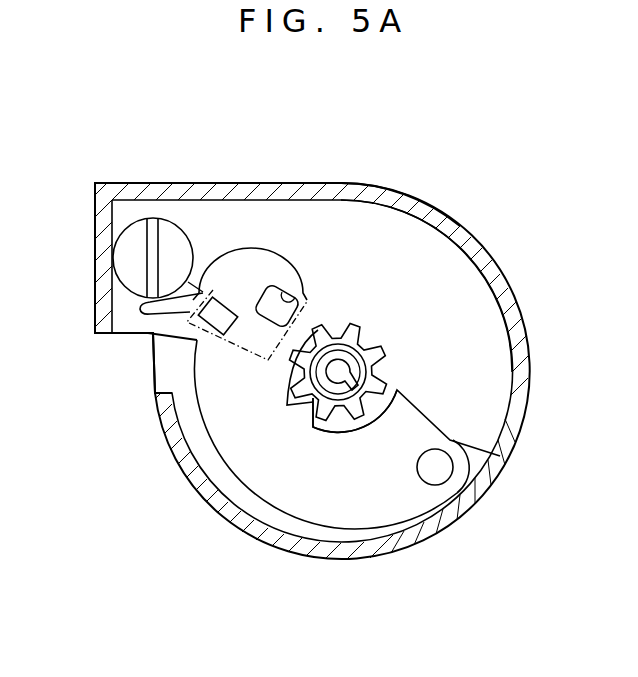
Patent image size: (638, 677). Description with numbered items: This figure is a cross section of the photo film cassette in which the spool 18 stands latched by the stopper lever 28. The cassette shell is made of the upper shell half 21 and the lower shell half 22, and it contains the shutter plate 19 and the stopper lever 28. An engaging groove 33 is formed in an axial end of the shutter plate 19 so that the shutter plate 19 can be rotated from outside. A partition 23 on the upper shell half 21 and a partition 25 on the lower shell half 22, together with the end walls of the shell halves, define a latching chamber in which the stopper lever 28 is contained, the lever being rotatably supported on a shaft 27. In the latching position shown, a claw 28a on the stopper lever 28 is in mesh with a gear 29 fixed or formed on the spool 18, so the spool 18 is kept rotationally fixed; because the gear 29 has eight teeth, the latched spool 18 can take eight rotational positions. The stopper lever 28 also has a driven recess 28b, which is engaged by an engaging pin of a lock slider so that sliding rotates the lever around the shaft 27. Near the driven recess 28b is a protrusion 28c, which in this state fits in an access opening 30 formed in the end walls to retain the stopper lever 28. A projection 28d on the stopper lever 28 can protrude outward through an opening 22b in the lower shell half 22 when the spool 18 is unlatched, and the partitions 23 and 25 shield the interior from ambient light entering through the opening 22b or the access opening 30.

The spool 18 is at (385, 372).
The shutter plate 19 is at (130, 250).
The upper shell half 21 is at (327, 190).
The lower shell half 22 is at (237, 525).
The opening 22b is at (158, 375).
The partition 23 is at (458, 307).
The partition 25 is at (292, 527).
The shaft 27 is at (438, 473).
The stopper lever 28 is at (355, 505).
The claw 28a is at (303, 407).
The driven recess 28b is at (303, 290).
The protrusion 28c is at (220, 325).
The projection 28d is at (140, 322).
The gear 29 is at (358, 330).
The access opening 30 is at (240, 303).
The engaging groove 33 is at (152, 235).